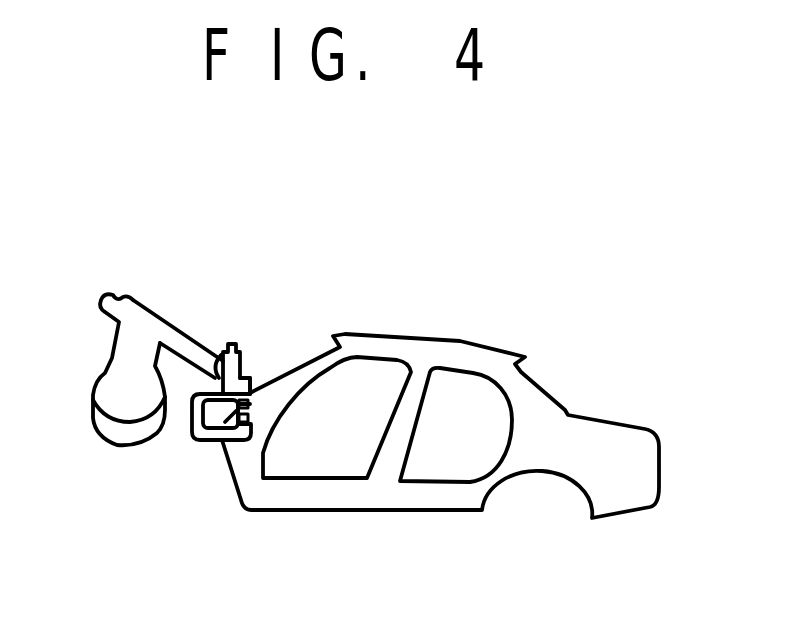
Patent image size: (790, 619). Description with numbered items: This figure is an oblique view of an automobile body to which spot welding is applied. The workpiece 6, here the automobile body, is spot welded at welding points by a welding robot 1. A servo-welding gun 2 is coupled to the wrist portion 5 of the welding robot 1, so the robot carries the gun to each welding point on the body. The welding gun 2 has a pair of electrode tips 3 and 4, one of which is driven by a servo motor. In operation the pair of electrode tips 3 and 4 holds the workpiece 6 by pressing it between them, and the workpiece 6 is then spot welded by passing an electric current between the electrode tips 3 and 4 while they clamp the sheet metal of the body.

The welding robot 1 is at (128, 427).
The servo-welding gun 2 is at (212, 367).
The electrode tip 3 is at (250, 405).
The electrode tip 4 is at (248, 418).
The wrist portion 5 is at (250, 363).
The workpiece 6 is at (433, 340).